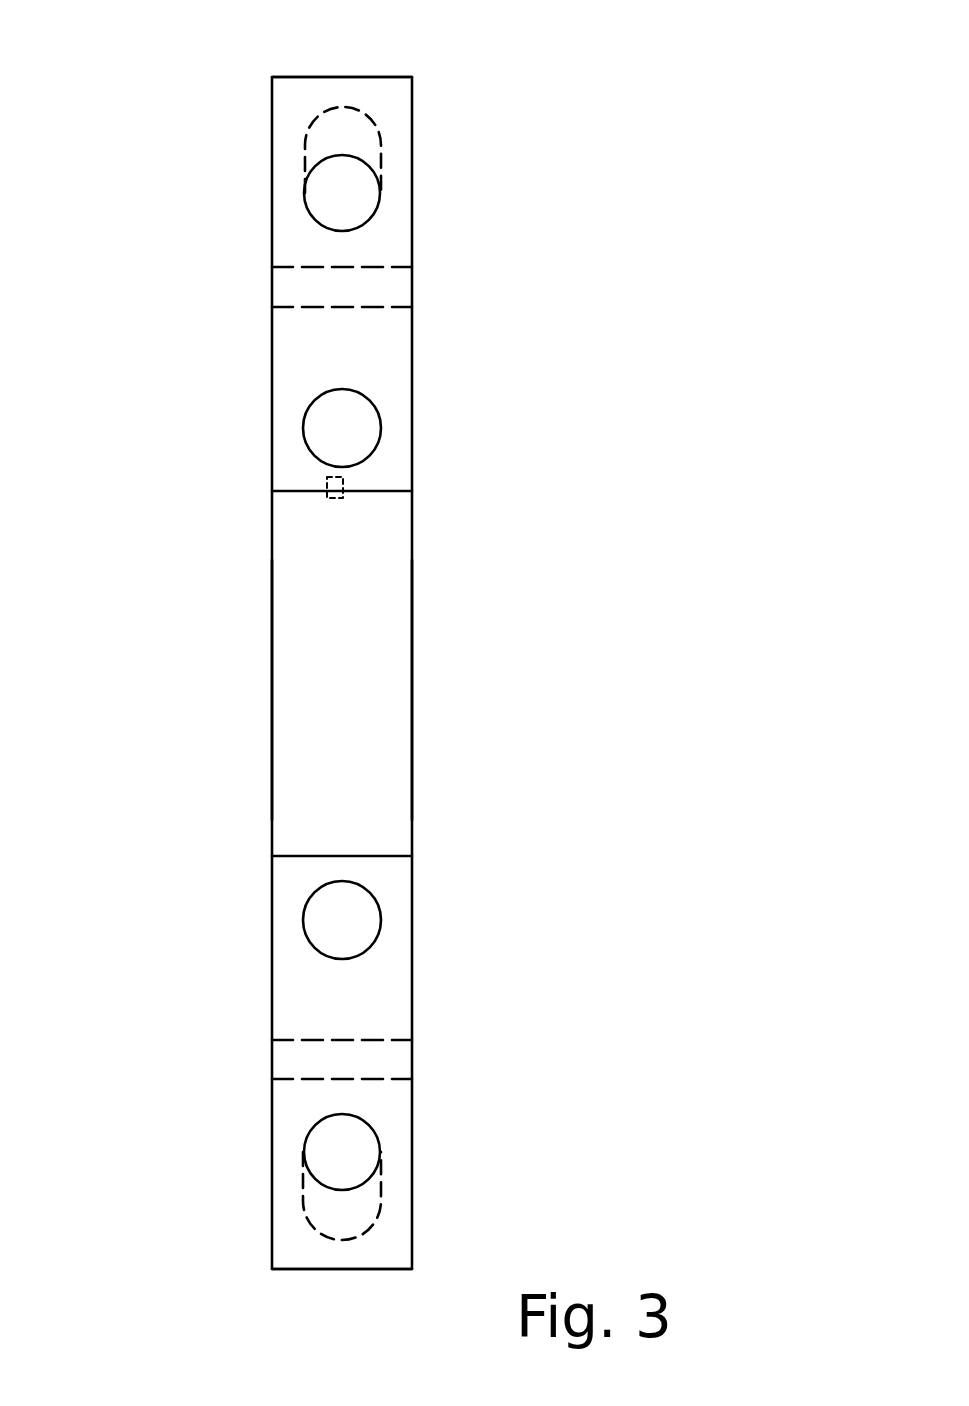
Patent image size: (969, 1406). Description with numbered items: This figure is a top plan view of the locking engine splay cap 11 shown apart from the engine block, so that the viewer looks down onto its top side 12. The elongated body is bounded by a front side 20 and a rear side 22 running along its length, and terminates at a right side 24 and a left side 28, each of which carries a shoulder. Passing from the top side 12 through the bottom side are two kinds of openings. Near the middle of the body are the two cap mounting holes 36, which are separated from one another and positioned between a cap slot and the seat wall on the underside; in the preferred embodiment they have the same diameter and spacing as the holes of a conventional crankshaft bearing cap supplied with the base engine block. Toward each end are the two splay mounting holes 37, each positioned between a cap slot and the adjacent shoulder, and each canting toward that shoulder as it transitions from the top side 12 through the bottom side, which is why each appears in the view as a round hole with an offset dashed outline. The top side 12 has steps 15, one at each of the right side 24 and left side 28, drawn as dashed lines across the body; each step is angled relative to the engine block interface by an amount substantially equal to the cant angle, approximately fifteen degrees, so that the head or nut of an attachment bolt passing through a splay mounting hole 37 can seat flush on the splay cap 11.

The splay cap 11 is at (168, 451).
The top side 12 is at (367, 788).
The steps 15 is at (387, 255).
The front side 20 is at (272, 697).
The rear side 22 is at (412, 603).
The right side 24 is at (370, 1269).
The left side 28 is at (368, 77).
The cap mounting holes 36 is at (368, 423).
The splay mounting holes 37 is at (367, 198).